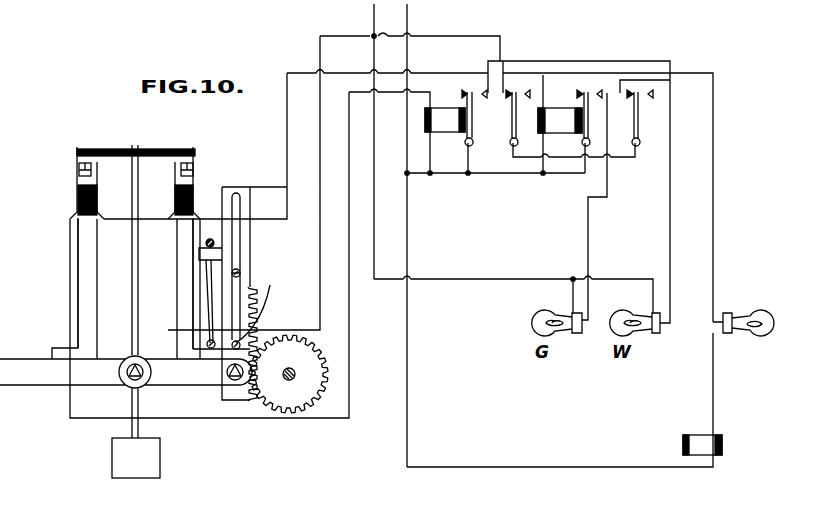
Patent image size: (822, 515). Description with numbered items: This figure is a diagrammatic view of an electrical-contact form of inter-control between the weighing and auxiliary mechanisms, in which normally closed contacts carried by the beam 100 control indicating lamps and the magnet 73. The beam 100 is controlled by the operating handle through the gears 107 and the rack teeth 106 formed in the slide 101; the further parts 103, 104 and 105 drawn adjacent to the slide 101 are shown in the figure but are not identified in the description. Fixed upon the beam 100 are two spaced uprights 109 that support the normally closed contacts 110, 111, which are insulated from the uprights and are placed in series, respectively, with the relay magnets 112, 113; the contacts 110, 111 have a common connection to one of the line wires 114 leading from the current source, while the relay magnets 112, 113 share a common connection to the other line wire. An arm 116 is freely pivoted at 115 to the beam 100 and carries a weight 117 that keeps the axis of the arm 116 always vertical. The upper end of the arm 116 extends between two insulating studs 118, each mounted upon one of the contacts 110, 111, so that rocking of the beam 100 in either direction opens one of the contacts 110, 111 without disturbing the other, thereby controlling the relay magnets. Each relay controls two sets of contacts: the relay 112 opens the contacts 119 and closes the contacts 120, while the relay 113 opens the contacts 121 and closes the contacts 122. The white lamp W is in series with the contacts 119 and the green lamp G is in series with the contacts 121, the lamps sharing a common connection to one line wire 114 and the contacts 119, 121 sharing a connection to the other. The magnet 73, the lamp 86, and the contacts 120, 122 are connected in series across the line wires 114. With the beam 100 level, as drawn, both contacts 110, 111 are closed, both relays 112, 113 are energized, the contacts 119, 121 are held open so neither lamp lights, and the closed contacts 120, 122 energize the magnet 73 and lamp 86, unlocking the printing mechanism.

The magnet 73 is at (697, 437).
The lamp 86 is at (762, 316).
The beam 100 is at (30, 378).
The slide 101 is at (245, 193).
The pin 103 is at (241, 273).
The link 104 is at (217, 304).
The bracket 105 is at (199, 253).
The rack teeth 106 is at (258, 333).
The gears 107 is at (290, 416).
The uprights 109 is at (187, 265).
The contact 110 is at (88, 169).
The contact 111 is at (188, 178).
The relay magnet 112 is at (445, 108).
The relay magnet 113 is at (557, 117).
The line wires 114 is at (398, 26).
The pivot 115 is at (143, 378).
The arm 116 is at (135, 312).
The weight 117 is at (148, 465).
The insulating studs 118 is at (157, 149).
The contacts 119 is at (477, 100).
The contacts 120 is at (508, 92).
The contacts 121 is at (598, 93).
The contacts 122 is at (631, 93).